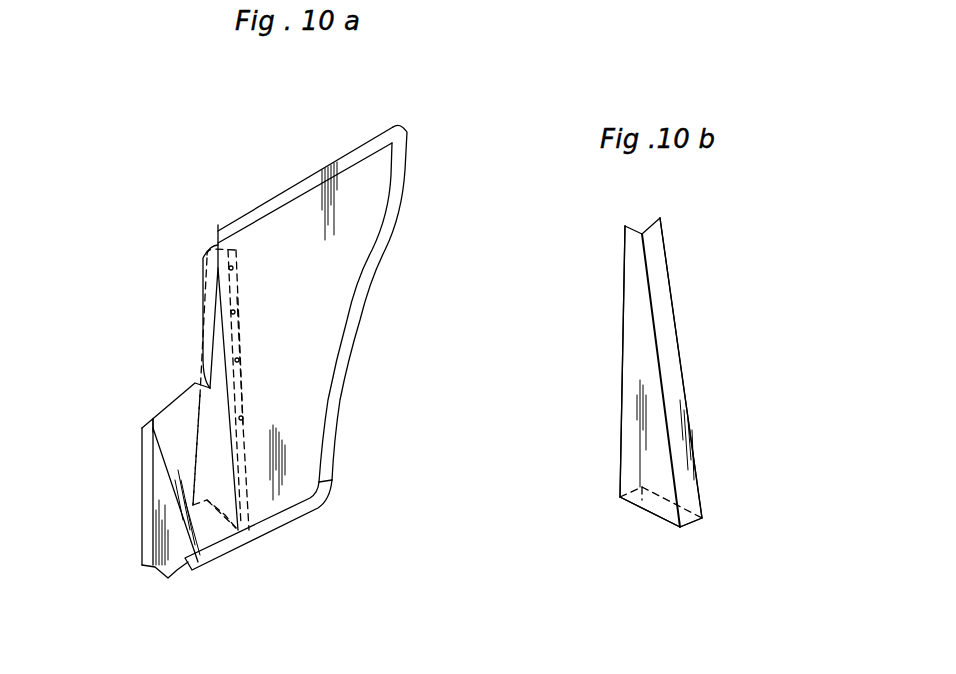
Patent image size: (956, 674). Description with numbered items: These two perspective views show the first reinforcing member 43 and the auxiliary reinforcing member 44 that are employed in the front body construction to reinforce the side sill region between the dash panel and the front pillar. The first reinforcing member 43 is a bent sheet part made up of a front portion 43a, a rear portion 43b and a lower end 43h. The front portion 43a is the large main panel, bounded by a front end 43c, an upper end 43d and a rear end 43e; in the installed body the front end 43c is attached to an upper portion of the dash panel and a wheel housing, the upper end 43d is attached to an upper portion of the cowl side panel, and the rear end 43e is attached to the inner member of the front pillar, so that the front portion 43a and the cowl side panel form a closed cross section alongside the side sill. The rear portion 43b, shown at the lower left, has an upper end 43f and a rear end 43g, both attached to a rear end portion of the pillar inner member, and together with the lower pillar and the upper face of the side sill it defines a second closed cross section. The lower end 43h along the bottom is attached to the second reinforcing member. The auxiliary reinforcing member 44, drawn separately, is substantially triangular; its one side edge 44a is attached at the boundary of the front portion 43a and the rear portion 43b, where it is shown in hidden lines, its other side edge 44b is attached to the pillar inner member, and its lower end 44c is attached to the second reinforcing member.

In FIG. 10A, the first reinforcing member 43 is at (211, 231).
In FIG. 10A, the front portion 43a is at (302, 385).
In FIG. 10A, the rear portion 43b is at (210, 533).
In FIG. 10A, the front end 43c is at (403, 178).
In FIG. 10A, the upper end 43d is at (287, 195).
In FIG. 10A, the rear end 43e is at (203, 302).
In FIG. 10A, the upper end 43f is at (180, 385).
In FIG. 10A, the rear end 43g is at (148, 490).
In FIG. 10A, the lower end 43h is at (257, 535).
In FIG. 10A, the auxiliary reinforcing member 44 is at (213, 445).
In FIG. 10B, the auxiliary reinforcing member 44 is at (690, 386).
In FIG. 10A, the one side edge 44a is at (237, 297).
In FIG. 10B, the one side edge 44a is at (693, 432).
In FIG. 10A, the other side edge 44b is at (208, 483).
In FIG. 10B, the other side edge 44b is at (632, 380).
In FIG. 10A, the lower end 44c is at (240, 537).
In FIG. 10B, the lower end 44c is at (672, 508).